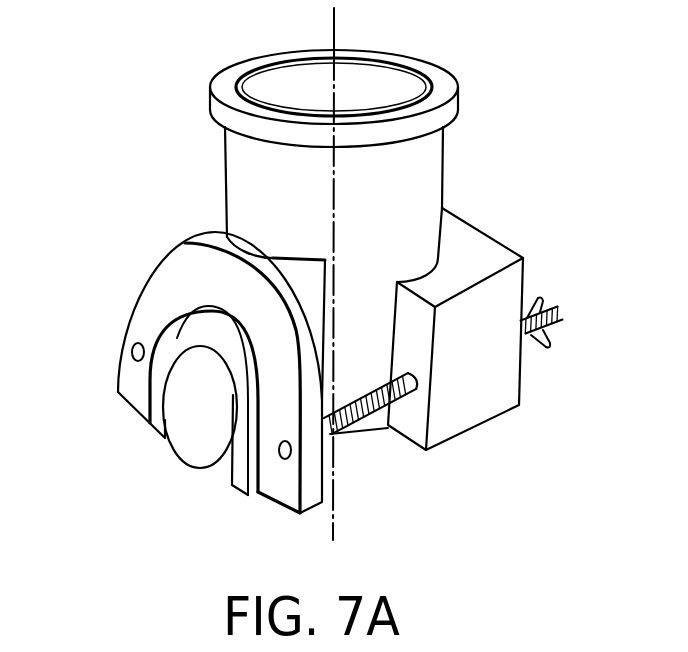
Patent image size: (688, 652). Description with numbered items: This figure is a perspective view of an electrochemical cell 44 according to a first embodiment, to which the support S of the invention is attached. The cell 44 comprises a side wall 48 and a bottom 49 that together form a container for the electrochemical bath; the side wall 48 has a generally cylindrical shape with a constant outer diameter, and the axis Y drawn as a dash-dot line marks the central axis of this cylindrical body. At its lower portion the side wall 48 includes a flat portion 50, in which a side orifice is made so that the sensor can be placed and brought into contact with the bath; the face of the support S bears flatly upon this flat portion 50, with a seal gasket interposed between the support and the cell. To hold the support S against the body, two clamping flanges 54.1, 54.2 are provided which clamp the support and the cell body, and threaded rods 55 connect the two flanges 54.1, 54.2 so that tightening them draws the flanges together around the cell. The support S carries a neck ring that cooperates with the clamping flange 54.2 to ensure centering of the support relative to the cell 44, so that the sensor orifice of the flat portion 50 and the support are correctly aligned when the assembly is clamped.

The cell 44 is at (192, 134).
The side wall 48 is at (423, 163).
The flat portion 50 is at (303, 270).
The clamping flange 54.1 is at (478, 258).
The clamping flange 54.2 is at (283, 486).
The bottom 49 is at (377, 432).
The threaded rods 55 is at (352, 427).
The support S is at (118, 486).
The longitudinal axis Y is at (336, 30).